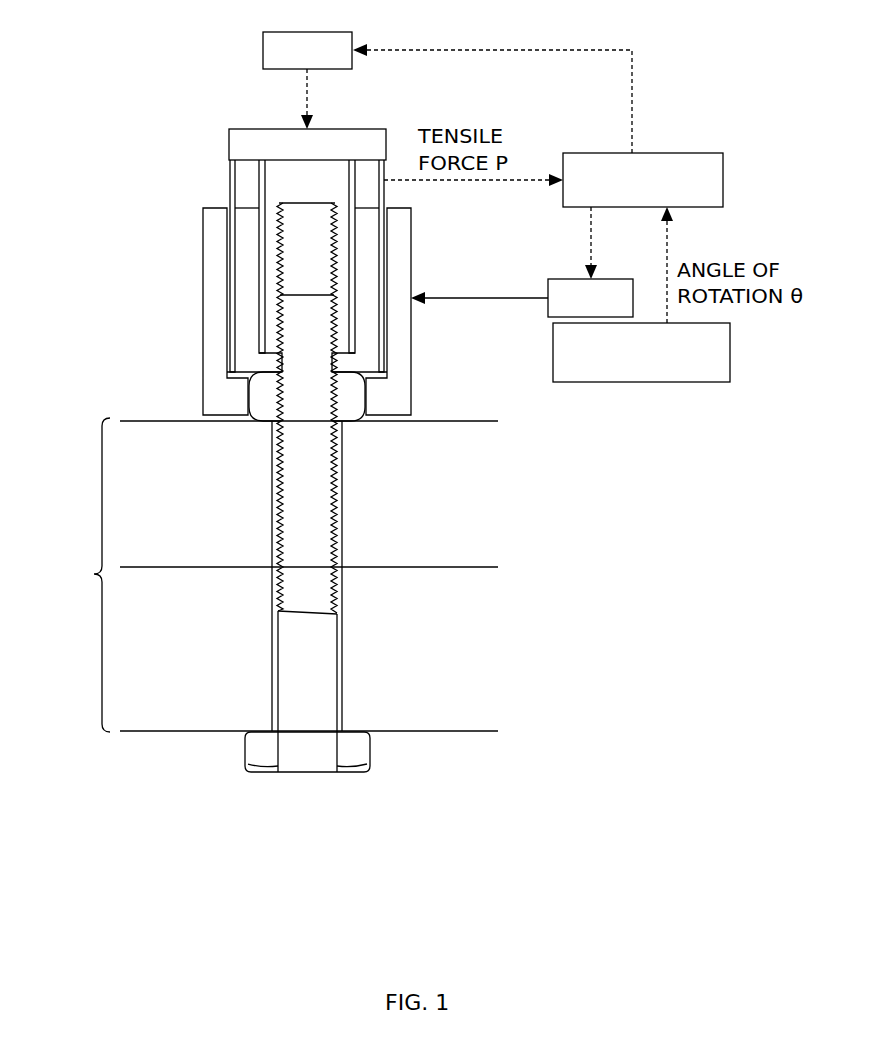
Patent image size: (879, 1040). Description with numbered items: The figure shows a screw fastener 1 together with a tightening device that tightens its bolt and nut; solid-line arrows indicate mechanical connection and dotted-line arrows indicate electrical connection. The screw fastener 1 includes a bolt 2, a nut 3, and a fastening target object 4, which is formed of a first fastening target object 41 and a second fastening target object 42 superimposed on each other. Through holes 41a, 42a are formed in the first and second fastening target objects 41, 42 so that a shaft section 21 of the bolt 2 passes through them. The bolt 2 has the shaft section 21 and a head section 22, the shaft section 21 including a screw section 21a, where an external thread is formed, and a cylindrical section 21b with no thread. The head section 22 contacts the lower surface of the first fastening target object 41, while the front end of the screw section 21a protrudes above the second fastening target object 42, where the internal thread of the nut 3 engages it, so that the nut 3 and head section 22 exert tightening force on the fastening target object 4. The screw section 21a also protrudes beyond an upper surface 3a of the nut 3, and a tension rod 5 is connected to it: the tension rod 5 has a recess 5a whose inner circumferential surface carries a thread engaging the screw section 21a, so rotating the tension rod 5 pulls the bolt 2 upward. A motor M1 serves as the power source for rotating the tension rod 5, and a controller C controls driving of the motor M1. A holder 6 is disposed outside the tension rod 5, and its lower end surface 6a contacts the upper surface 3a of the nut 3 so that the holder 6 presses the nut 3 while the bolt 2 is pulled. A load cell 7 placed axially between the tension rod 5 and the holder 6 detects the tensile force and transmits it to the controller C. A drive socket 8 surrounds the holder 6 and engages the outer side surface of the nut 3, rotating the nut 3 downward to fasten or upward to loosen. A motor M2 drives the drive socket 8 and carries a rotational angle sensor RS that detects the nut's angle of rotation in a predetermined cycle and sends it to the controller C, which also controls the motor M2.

The screw fastener 1 is at (118, 384).
The bolt 2 is at (259, 536).
The nut 3 is at (262, 408).
The upper surface of the nut 3a is at (336, 384).
The fastening target object 4 is at (92, 575).
The tension rod 5 is at (270, 142).
The recess 5a is at (318, 203).
The holder 6 is at (248, 268).
The lower end surface of the holder 6a is at (240, 377).
The load cell 7 is at (244, 182).
The drive socket 8 is at (214, 306).
The shaft section 21 is at (242, 467).
The screw section 21a is at (295, 583).
The cylindrical section 21b is at (292, 648).
The head section 22 is at (260, 757).
The first fastening target object 41 is at (435, 706).
The through hole 41a is at (343, 657).
The second fastening target object 42 is at (470, 452).
The through hole 42a is at (343, 514).
The motor M1 is at (263, 50).
The motor M2 is at (566, 279).
The controller C is at (723, 180).
The rotational angle sensor RS is at (730, 350).